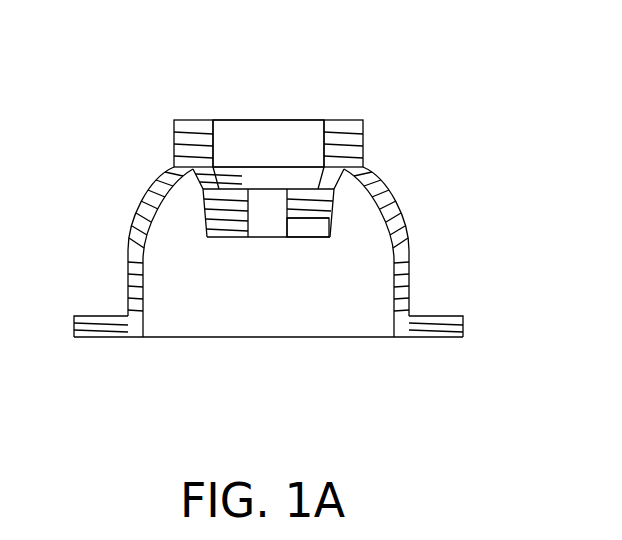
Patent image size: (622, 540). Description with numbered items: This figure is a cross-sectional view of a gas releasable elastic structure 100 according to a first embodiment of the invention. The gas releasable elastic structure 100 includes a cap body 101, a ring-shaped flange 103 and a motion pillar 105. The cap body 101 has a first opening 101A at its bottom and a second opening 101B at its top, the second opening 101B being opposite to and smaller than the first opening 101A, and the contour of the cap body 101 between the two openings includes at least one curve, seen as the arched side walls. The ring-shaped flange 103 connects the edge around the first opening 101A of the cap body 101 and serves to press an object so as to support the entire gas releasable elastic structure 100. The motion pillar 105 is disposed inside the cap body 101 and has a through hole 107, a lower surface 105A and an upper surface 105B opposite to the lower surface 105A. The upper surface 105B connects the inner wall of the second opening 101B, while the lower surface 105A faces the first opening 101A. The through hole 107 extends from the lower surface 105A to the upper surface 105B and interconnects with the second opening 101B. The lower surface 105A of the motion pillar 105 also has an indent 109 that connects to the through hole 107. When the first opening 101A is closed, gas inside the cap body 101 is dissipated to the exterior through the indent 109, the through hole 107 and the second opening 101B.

The gas releasable elastic structure 100 is at (470, 115).
The cap body 101 is at (392, 208).
The first opening 101A is at (320, 315).
The second opening 101B is at (301, 132).
The ring-shaped flange 103 is at (450, 327).
The motion pillar 105 is at (213, 210).
The lower surface 105A is at (223, 238).
The upper surface 105B is at (240, 185).
The through hole 107 is at (268, 226).
The indent 109 is at (310, 228).